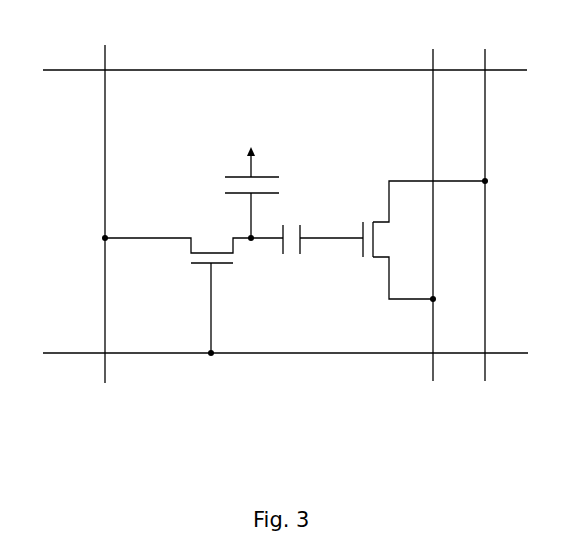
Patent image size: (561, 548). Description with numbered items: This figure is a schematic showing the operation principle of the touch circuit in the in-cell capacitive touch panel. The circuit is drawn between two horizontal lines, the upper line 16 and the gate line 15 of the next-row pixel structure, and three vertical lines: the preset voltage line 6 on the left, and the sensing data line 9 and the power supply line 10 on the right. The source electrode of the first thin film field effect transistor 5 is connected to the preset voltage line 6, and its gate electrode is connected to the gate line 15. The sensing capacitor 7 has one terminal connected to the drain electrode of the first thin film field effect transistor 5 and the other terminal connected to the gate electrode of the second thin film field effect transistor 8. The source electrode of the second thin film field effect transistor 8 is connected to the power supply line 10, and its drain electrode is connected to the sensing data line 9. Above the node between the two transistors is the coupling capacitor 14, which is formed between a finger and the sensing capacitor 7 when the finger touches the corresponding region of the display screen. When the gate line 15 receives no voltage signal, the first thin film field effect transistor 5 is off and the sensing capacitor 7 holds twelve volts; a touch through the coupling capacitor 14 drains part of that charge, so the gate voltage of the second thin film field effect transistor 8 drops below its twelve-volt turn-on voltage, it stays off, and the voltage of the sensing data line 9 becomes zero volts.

The first thin film field effect transistor 5 is at (194, 295).
The preset voltage line 6 is at (104, 199).
The sensing capacitor 7 is at (323, 253).
The second thin film field effect transistor 8 is at (424, 240).
The sensing data line 9 is at (433, 204).
The power supply line 10 is at (485, 204).
The coupling capacitor 14 is at (239, 192).
The gate line 15 is at (271, 354).
The scan line 16 is at (273, 69).